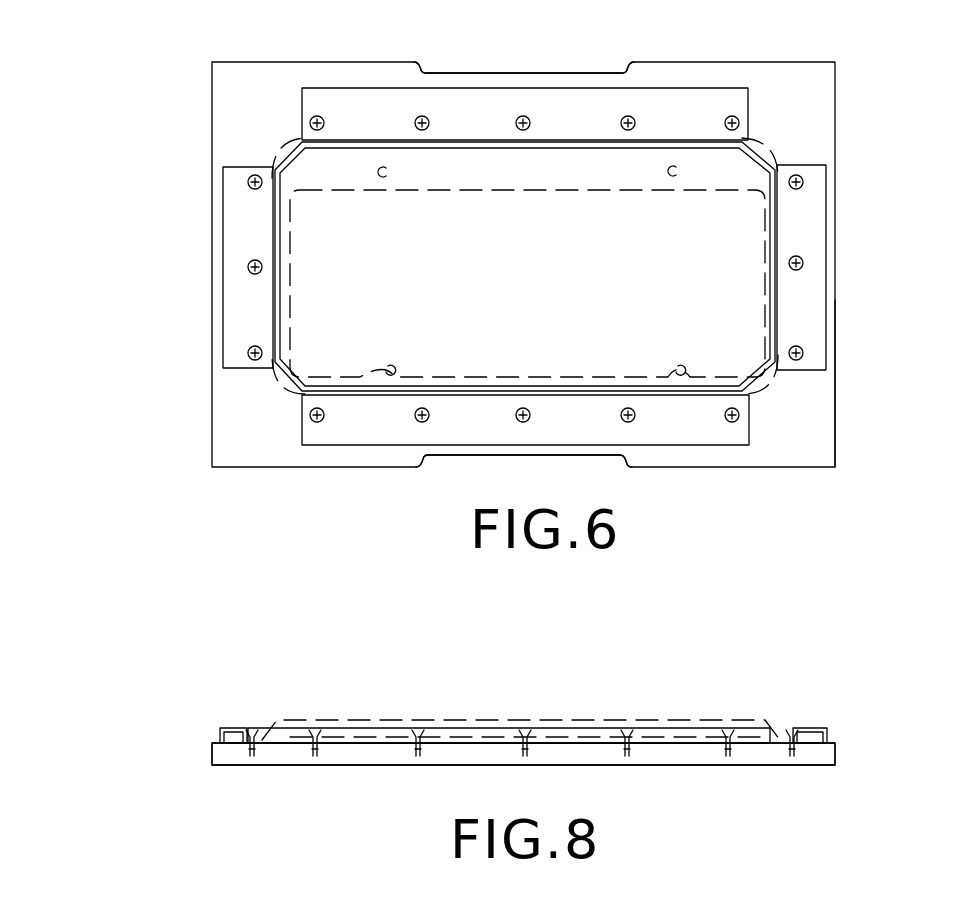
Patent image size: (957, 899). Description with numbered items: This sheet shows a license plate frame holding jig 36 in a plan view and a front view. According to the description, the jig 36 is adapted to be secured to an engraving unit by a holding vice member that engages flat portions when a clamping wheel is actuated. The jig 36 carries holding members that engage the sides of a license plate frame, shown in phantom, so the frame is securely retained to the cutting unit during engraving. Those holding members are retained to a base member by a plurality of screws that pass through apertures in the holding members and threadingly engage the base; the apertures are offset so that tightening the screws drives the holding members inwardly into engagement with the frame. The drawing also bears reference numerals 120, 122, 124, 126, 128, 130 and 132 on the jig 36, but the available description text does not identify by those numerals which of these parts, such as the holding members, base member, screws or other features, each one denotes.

In FIG. 6, the license plate frame holding jig 36 is at (852, 91).
In FIG. 8, the license plate frame holding jig 36 is at (850, 741).
In FIG. 6, the notch 120 is at (553, 75).
In FIG. 6, the top clamp bar 122 is at (683, 108).
In FIG. 6, the right clamp bar 124 is at (800, 292).
In FIG. 8, the right clamp bar 124 is at (812, 728).
In FIG. 6, the bottom clamp bar 126 is at (675, 430).
In FIG. 8, the bottom clamp bar 126 is at (380, 733).
In FIG. 6, the left clamp bar 128 is at (243, 236).
In FIG. 8, the left clamp bar 128 is at (232, 728).
In FIG. 6, the base plate 130 is at (810, 435).
In FIG. 8, the base plate 130 is at (687, 753).
In FIG. 6, the screws 132 is at (423, 117).